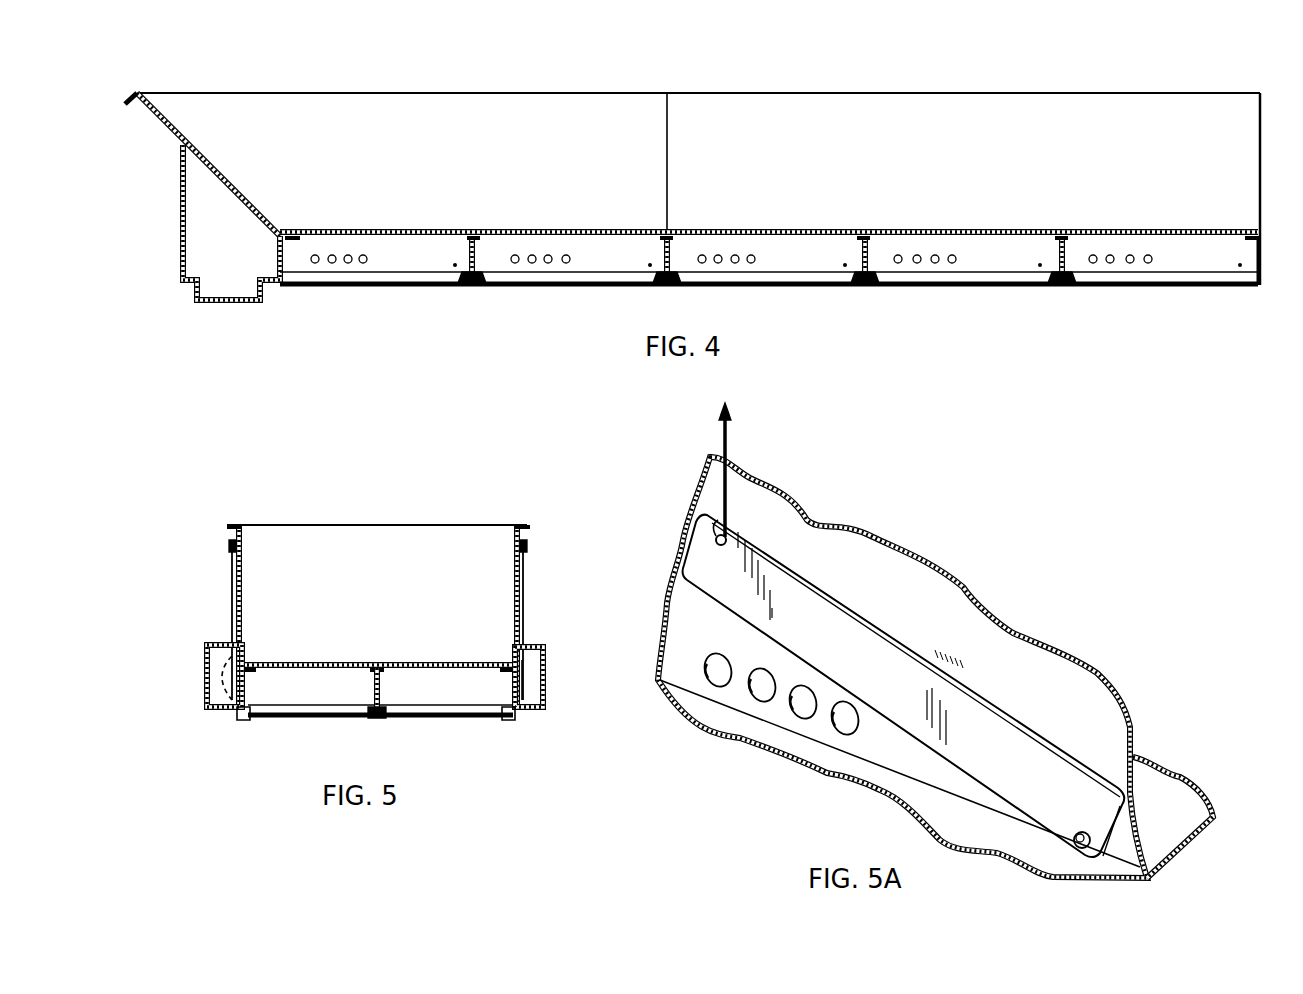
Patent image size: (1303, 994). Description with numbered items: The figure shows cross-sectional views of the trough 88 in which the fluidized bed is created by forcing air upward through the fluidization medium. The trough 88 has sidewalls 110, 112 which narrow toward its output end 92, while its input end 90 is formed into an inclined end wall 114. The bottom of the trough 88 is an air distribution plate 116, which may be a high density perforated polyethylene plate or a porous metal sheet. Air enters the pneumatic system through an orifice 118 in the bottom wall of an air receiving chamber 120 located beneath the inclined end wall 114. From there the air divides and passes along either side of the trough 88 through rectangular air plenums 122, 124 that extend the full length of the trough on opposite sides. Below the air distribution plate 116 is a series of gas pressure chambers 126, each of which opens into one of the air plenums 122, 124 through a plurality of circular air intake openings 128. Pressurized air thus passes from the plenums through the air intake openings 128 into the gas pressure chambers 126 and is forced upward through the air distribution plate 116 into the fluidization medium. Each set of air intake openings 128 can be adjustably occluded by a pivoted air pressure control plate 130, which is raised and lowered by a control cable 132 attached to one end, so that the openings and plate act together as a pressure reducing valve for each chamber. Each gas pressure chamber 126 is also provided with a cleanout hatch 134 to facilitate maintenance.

In FIG. 4, the trough 88 is at (908, 80).
In FIG. 4, the input end 90 is at (242, 188).
In FIG. 4, the output end 92 is at (1167, 128).
In FIG. 5, the sidewall 110 is at (247, 567).
In FIG. 4, the sidewall 112 is at (527, 170).
In FIG. 5, the sidewall 112 is at (512, 565).
In FIG. 5A, the sidewall 112 is at (905, 580).
In FIG. 4, the inclined end wall 114 is at (205, 158).
In FIG. 5, the inclined end wall 114 is at (394, 588).
In FIG. 4, the air distribution plate 116 is at (778, 228).
In FIG. 5, the air distribution plate 116 is at (448, 660).
In FIG. 4, the orifice 118 is at (193, 290).
In FIG. 4, the air receiving chamber 120 is at (202, 225).
In FIG. 5, the air plenum 122 is at (217, 660).
In FIG. 5, the air plenum 124 is at (530, 663).
In FIG. 4, the gas pressure chamber 126 is at (402, 248).
In FIG. 5, the gas pressure chamber 126 is at (322, 683).
In FIG. 4, the air intake openings 128 is at (348, 263).
In FIG. 5, the air intake openings 128 is at (250, 713).
In FIG. 5A, the air intake openings 128 is at (845, 735).
In FIG. 5, the air pressure control plate 130 is at (205, 696).
In FIG. 5A, the air pressure control plate 130 is at (1002, 748).
In FIG. 5, the control cable 132 is at (232, 578).
In FIG. 5A, the control cable 132 is at (725, 460).
In FIG. 4, the cleanout hatch 134 is at (463, 285).
In FIG. 5, the cleanout hatch 134 is at (320, 717).